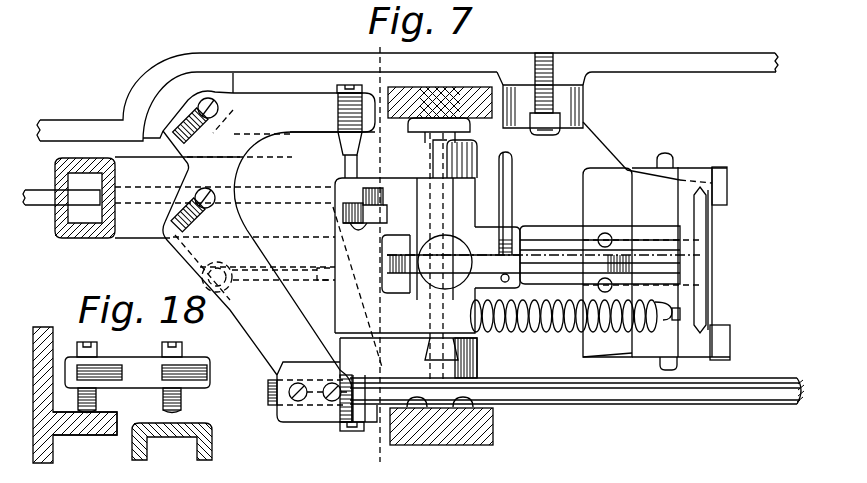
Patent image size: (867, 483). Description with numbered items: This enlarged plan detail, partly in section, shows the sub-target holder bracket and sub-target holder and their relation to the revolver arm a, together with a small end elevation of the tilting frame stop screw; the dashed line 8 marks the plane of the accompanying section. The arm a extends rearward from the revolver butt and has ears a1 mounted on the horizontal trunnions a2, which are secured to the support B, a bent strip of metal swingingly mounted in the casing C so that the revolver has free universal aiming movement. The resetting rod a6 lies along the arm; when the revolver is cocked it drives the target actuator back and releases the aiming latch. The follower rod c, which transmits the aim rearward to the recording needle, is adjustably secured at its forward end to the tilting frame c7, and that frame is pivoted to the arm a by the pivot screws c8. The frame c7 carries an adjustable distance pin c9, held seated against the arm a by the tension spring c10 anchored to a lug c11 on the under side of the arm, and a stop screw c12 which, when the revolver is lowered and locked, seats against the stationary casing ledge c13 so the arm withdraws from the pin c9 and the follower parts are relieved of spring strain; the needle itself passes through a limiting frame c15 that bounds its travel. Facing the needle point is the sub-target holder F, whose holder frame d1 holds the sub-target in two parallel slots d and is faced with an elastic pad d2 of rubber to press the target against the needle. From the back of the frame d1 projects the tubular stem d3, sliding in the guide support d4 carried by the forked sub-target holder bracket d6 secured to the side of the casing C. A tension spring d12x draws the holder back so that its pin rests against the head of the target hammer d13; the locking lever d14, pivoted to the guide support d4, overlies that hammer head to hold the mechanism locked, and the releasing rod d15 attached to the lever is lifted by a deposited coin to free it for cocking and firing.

In FIG. 7, the casing C is at (691, 57).
In FIG. 18, the casing C is at (38, 327).
In FIG. 7, the stationary casing ledge c13 is at (160, 110).
In FIG. 7, the stop screw c12 is at (212, 98).
In FIG. 18, the stop screw c12 is at (97, 350).
In FIG. 7, the pivot screws c8 is at (338, 88).
In FIG. 7, the section line 8 is at (380, 255).
In FIG. 7, the resetting rod a6 is at (40, 188).
In FIG. 7, the arm a is at (462, 192).
In FIG. 7, the adjustable distance pin c9 is at (206, 188).
In FIG. 18, the adjustable distance pin c9 is at (183, 350).
In FIG. 7, the tilting frame c7 is at (185, 253).
In FIG. 18, the tilting frame c7 is at (131, 381).
In FIG. 7, the tension spring c10 is at (202, 280).
In FIG. 7, the lug c11 is at (290, 258).
In FIG. 7, the ears a1 is at (358, 186).
In FIG. 18, the ears a1 is at (190, 424).
In FIG. 7, the horizontal trunnions a2 is at (456, 133).
In FIG. 7, the target hammer d13 is at (448, 274).
In FIG. 7, the releasing rod d15 is at (496, 198).
In FIG. 7, the tubular stem d3 is at (550, 232).
In FIG. 7, the forked sub-target holder bracket d6 is at (590, 140).
In FIG. 7, the sub-target holder F is at (685, 220).
In FIG. 7, the guide support d4 is at (641, 245).
In FIG. 7, the parallel slots d is at (722, 185).
In FIG. 7, the holder frame d1 is at (737, 160).
In FIG. 7, the elastic pad d2 is at (700, 250).
In FIG. 7, the locking lever d14 is at (547, 312).
In FIG. 7, the tension spring d12x is at (608, 332).
In FIG. 7, the follower rod c is at (643, 395).
In FIG. 18, the limiting frame c15 is at (92, 436).
In FIG. 7, the support B is at (493, 427).